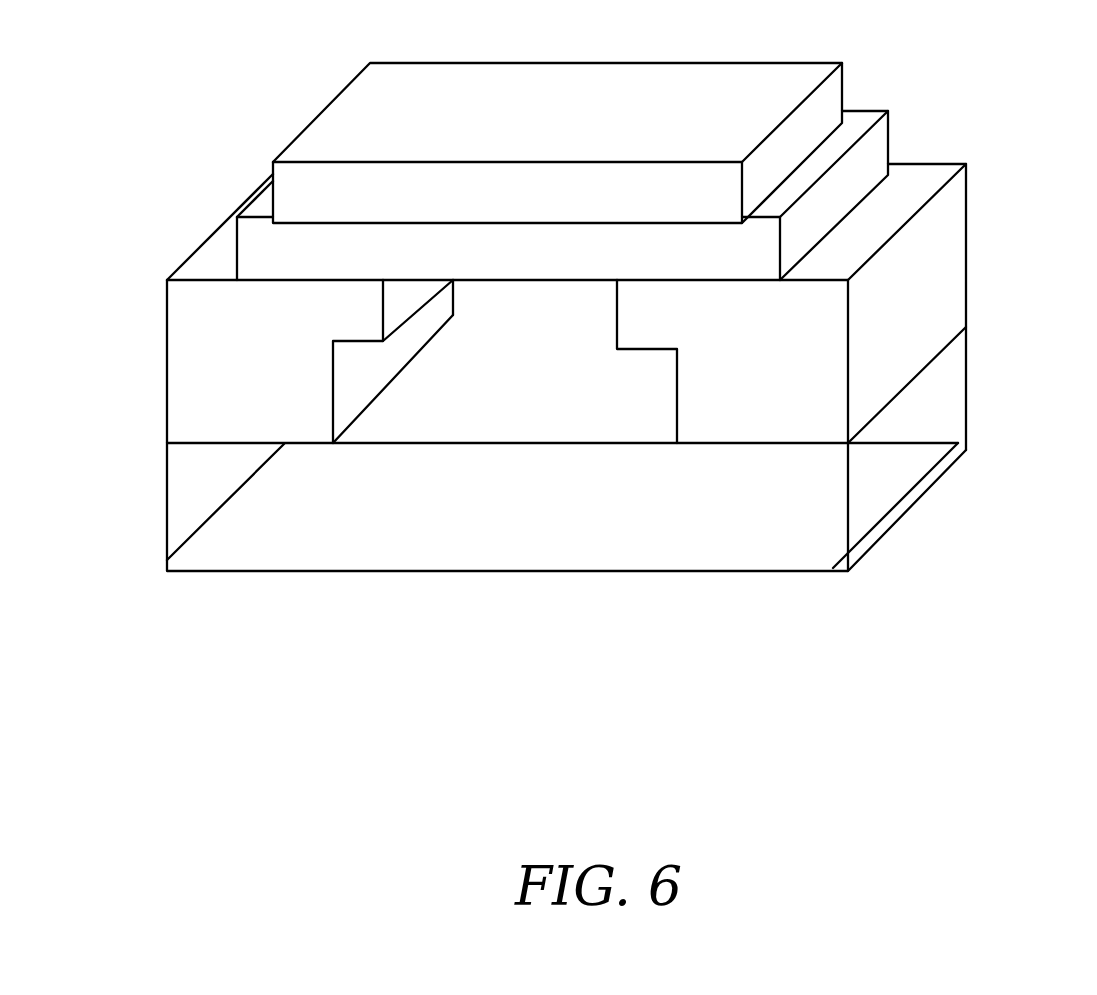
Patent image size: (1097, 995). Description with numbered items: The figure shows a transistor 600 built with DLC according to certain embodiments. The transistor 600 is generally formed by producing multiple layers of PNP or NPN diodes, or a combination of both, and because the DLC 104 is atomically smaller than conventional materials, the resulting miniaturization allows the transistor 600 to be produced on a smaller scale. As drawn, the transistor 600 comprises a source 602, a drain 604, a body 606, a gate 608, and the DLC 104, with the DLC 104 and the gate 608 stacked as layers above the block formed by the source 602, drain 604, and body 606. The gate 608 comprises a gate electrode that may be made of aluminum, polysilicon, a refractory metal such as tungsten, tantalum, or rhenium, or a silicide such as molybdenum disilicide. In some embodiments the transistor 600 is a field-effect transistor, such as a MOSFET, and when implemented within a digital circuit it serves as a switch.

The transistor 600 is at (578, 378).
The source 602 is at (205, 257).
The drain 604 is at (953, 230).
The body 606 is at (887, 520).
The DLC 104 is at (877, 151).
The gate 608 is at (830, 99).